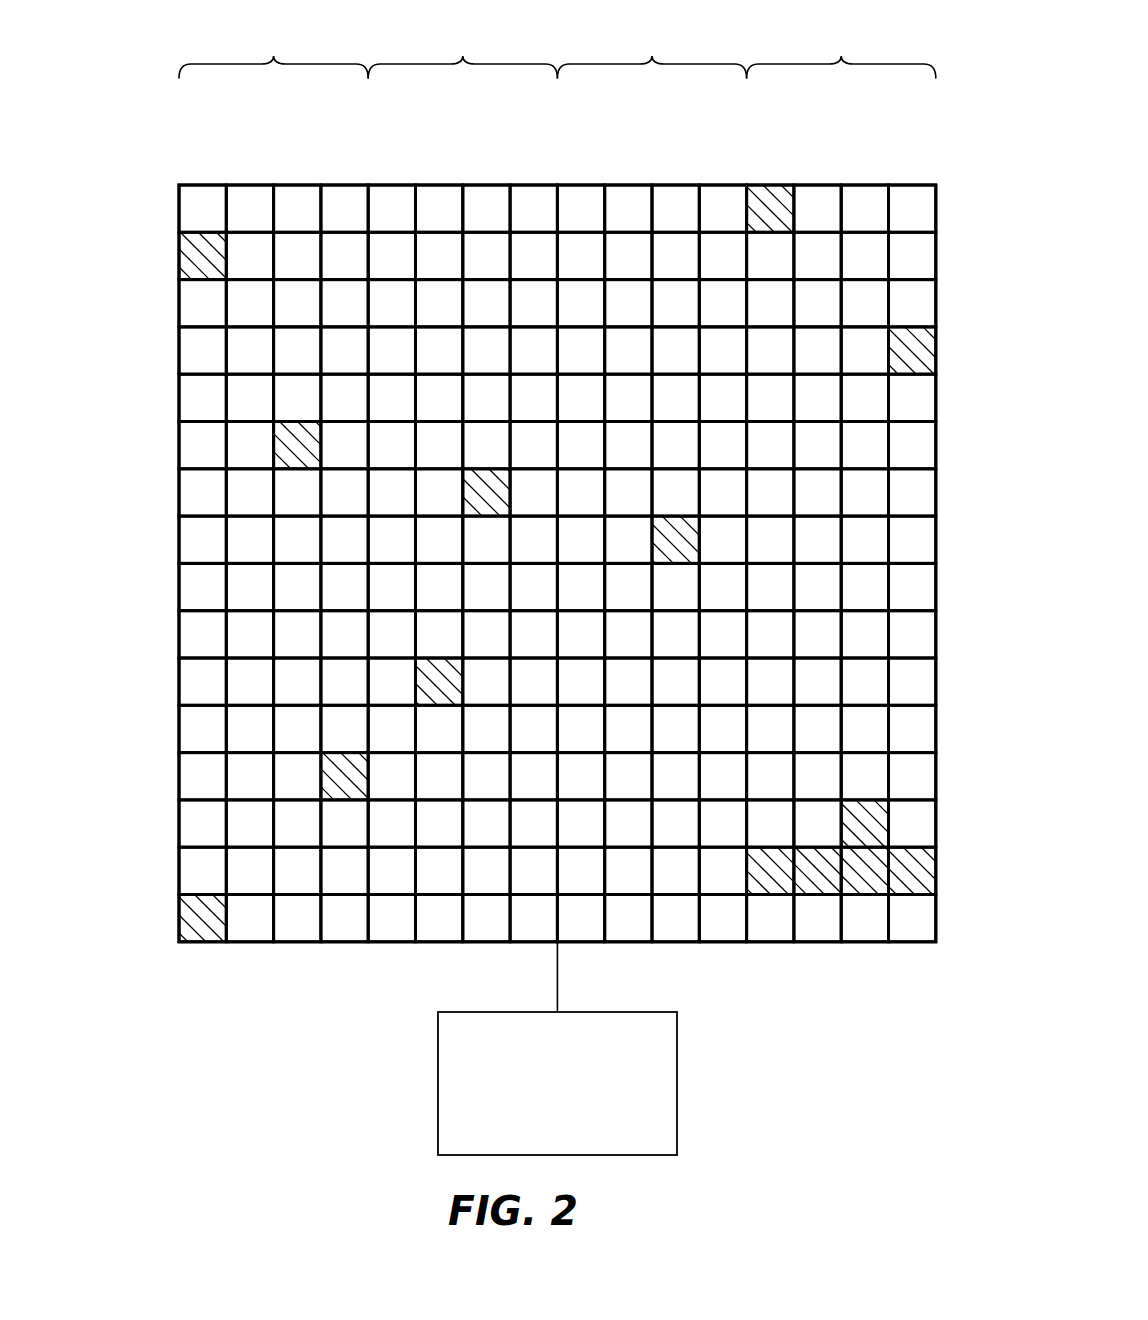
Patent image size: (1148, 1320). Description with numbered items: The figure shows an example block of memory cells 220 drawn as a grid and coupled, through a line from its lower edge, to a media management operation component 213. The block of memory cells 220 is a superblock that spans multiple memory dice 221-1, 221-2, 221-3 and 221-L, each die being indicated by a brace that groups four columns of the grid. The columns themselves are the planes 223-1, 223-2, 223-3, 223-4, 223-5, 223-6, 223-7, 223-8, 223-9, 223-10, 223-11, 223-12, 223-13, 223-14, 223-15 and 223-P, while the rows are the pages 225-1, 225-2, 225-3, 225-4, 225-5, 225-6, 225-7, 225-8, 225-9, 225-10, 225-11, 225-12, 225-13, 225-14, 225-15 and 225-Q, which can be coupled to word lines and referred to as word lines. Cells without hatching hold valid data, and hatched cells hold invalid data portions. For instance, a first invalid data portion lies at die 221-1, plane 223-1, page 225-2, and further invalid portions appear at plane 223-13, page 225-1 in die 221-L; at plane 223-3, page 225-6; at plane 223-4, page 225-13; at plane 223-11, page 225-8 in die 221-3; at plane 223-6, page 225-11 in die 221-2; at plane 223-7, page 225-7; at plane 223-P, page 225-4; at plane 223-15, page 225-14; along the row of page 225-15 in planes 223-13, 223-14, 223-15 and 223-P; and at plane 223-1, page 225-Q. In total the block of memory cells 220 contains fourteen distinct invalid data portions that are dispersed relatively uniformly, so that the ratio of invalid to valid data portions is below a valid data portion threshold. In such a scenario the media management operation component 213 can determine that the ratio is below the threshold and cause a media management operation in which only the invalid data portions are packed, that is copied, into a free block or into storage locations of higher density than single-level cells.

The block of memory cells 220 is at (155, 43).
The media management operation component 213 is at (665, 1084).
The memory die 221-1 is at (274, 486).
The memory die 221-2 is at (463, 486).
The memory die 221-3 is at (657, 486).
The memory die 221-L is at (841, 486).
The plane 223-1 is at (203, 185).
The plane 223-2 is at (250, 185).
The plane 223-3 is at (297, 185).
The plane 223-4 is at (344, 185).
The plane 223-5 is at (392, 185).
The plane 223-6 is at (439, 185).
The plane 223-7 is at (486, 185).
The plane 223-8 is at (534, 185).
The plane 223-9 is at (581, 185).
The plane 223-10 is at (628, 185).
The plane 223-11 is at (676, 185).
The plane 223-12 is at (723, 185).
The plane 223-13 is at (770, 185).
The plane 223-14 is at (818, 185).
The plane 223-15 is at (865, 185).
The plane 223-P is at (912, 185).
The page 225-1 is at (179, 212).
The page 225-2 is at (179, 259).
The page 225-3 is at (179, 306).
The page 225-4 is at (179, 354).
The page 225-5 is at (179, 401).
The page 225-6 is at (179, 448).
The page 225-7 is at (179, 495).
The page 225-8 is at (179, 543).
The page 225-9 is at (179, 590).
The page 225-10 is at (179, 637).
The page 225-11 is at (179, 685).
The page 225-12 is at (179, 732).
The page 225-13 is at (179, 779).
The page 225-14 is at (179, 826).
The page 225-15 is at (179, 874).
The page 225-Q is at (179, 921).